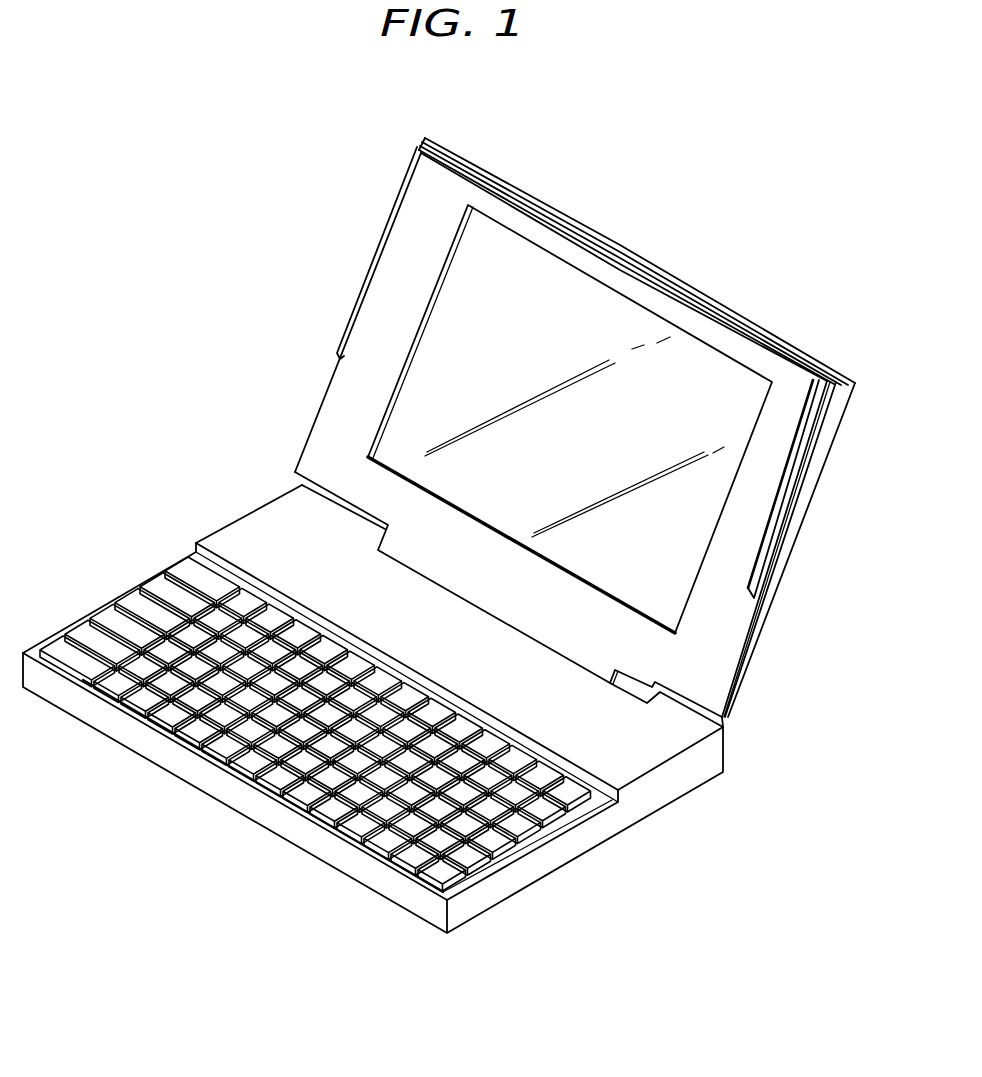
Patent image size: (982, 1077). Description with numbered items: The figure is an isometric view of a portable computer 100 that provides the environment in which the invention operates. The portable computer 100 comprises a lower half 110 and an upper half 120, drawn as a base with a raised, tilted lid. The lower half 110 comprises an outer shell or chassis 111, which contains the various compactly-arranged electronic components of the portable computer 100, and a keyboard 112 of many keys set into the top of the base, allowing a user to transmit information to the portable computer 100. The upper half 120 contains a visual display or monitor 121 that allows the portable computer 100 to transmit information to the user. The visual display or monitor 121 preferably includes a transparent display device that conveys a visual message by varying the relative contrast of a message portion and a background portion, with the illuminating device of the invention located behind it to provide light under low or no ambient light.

The portable computer 100 is at (210, 356).
The lower half 110 is at (245, 517).
The outer shell or chassis 111 is at (690, 797).
The keyboard 112 is at (138, 603).
The upper half 120 is at (317, 408).
The visual display or monitor 121 is at (519, 310).